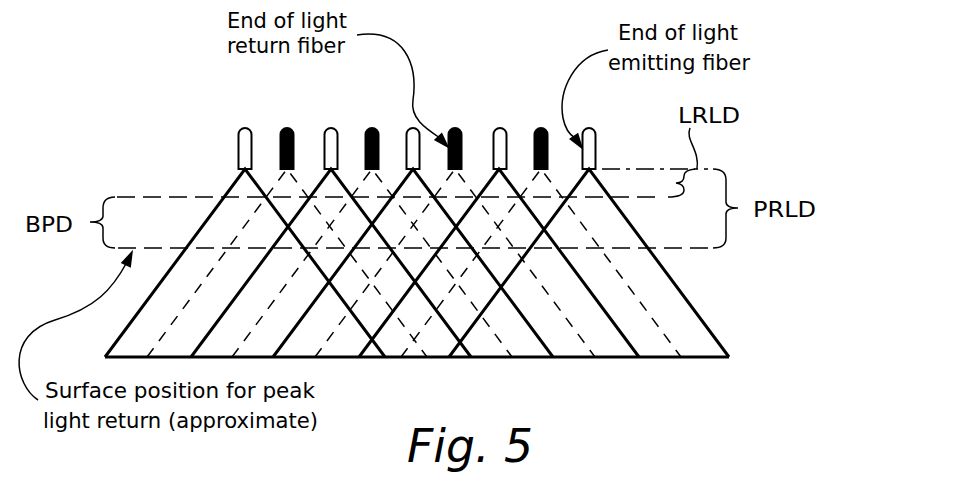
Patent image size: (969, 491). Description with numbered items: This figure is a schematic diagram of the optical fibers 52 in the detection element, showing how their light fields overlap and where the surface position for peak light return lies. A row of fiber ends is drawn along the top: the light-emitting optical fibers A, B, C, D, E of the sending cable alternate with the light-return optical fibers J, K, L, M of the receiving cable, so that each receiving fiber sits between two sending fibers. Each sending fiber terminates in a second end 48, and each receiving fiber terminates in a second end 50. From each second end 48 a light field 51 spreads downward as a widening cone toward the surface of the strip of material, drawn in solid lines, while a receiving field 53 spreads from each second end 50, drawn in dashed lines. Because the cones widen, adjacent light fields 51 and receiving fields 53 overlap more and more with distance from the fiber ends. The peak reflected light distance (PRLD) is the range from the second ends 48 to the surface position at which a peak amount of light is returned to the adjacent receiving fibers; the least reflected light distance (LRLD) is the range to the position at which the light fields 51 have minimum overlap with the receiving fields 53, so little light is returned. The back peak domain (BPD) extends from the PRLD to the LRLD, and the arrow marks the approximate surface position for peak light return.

The second end 48 is at (247, 183).
The second end 50 is at (287, 219).
The light field 51 is at (619, 223).
The optical fiber 52 is at (208, 132).
The receiving field 53 is at (566, 243).
The optical fiber A is at (246, 149).
The optical fiber B is at (329, 136).
The optical fiber C is at (414, 135).
The optical fiber D is at (501, 133).
The optical fiber E is at (592, 136).
The optical fiber J is at (277, 186).
The optical fiber K is at (372, 128).
The optical fiber L is at (455, 128).
The optical fiber M is at (541, 128).